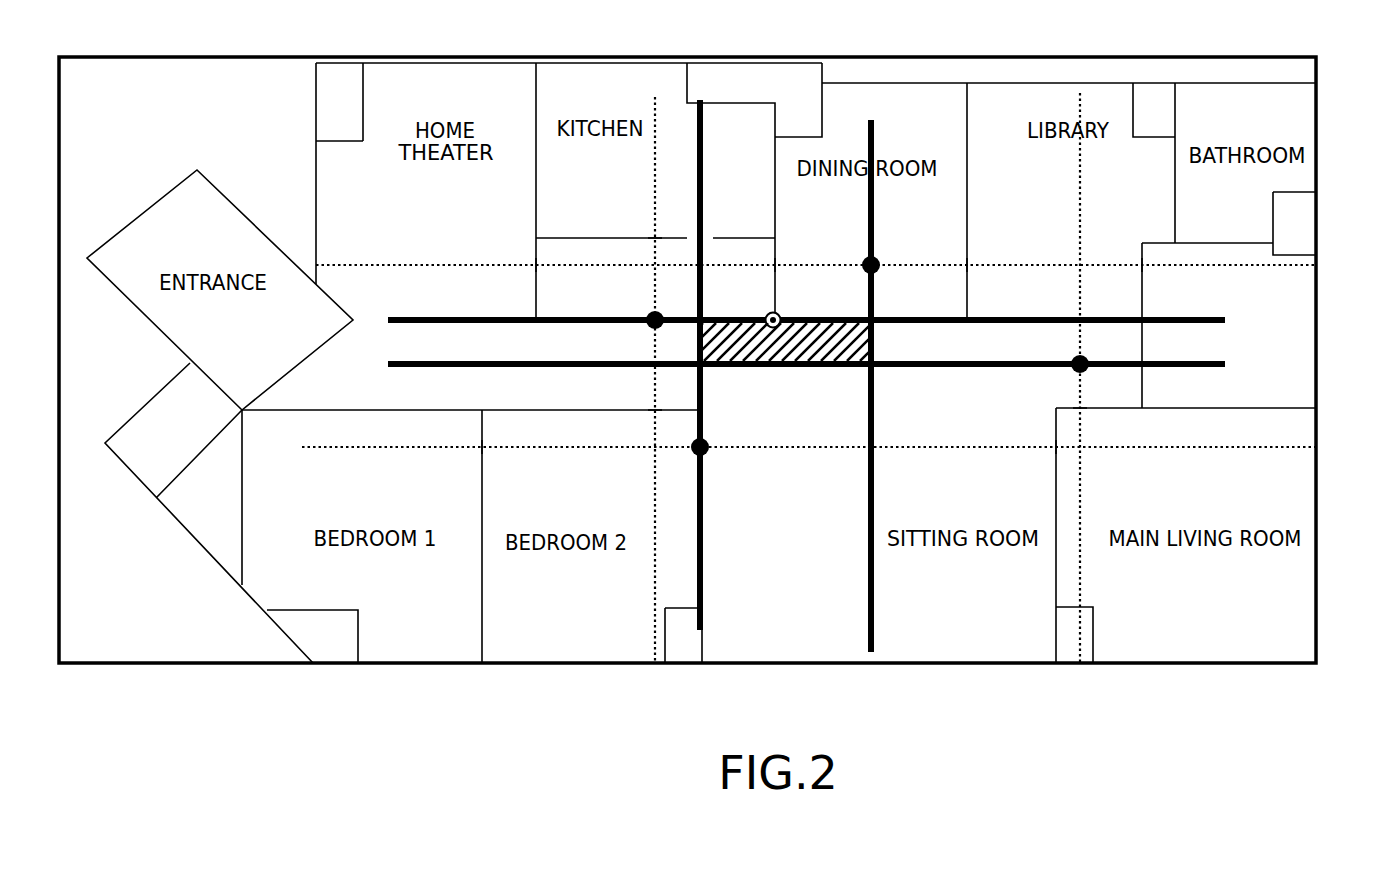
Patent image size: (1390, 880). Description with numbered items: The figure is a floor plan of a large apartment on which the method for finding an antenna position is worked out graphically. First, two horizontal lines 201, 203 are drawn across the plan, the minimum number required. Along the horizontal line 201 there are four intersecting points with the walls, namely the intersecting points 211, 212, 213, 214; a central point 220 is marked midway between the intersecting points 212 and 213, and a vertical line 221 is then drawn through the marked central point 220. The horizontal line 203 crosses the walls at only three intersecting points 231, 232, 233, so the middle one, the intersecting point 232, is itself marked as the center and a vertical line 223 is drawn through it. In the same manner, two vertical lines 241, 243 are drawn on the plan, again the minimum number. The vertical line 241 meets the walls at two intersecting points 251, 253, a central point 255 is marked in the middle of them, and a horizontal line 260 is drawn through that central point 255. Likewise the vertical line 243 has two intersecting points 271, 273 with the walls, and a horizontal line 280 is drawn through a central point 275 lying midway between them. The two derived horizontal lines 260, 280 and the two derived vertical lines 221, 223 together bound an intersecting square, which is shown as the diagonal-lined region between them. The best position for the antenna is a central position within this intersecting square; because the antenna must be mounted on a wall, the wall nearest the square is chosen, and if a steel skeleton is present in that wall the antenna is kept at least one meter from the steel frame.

The horizontal line 201 is at (1318, 262).
The horizontal line 203 is at (1318, 445).
The intersecting point 211 is at (536, 265).
The intersecting point 212 is at (775, 265).
The intersecting point 213 is at (967, 265).
The intersecting point 214 is at (1140, 265).
The central point 220 is at (872, 260).
The vertical line 221 is at (877, 120).
The vertical line 223 is at (705, 598).
The intersecting point 231 is at (483, 450).
The intersecting point 232 is at (708, 455).
The intersecting point 233 is at (1055, 450).
The vertical line 241 is at (653, 664).
The vertical line 243 is at (1084, 664).
The intersecting point 251 is at (654, 236).
The intersecting point 253 is at (655, 412).
The central point 255 is at (652, 325).
The horizontal line 260 is at (1226, 320).
The intersecting point 271 is at (1078, 318).
The intersecting point 273 is at (1082, 412).
The central point 275 is at (1077, 372).
The horizontal line 280 is at (1226, 364).